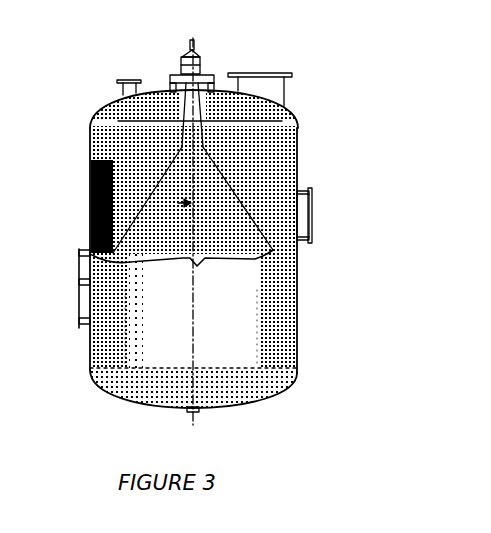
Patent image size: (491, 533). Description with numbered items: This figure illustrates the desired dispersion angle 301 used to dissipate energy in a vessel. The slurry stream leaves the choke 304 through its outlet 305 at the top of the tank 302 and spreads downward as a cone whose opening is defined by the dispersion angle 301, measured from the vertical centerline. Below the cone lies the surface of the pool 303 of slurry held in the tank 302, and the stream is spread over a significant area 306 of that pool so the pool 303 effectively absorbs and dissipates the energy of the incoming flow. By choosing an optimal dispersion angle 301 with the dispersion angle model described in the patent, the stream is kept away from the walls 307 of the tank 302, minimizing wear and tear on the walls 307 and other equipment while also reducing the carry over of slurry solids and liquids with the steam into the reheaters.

The dispersion angle 301 is at (158, 192).
The tank 302 is at (297, 156).
The pool 303 is at (270, 253).
The choke 304 is at (200, 70).
The outlet 305 is at (167, 87).
The area 306 is at (190, 268).
The walls 307 is at (297, 183).